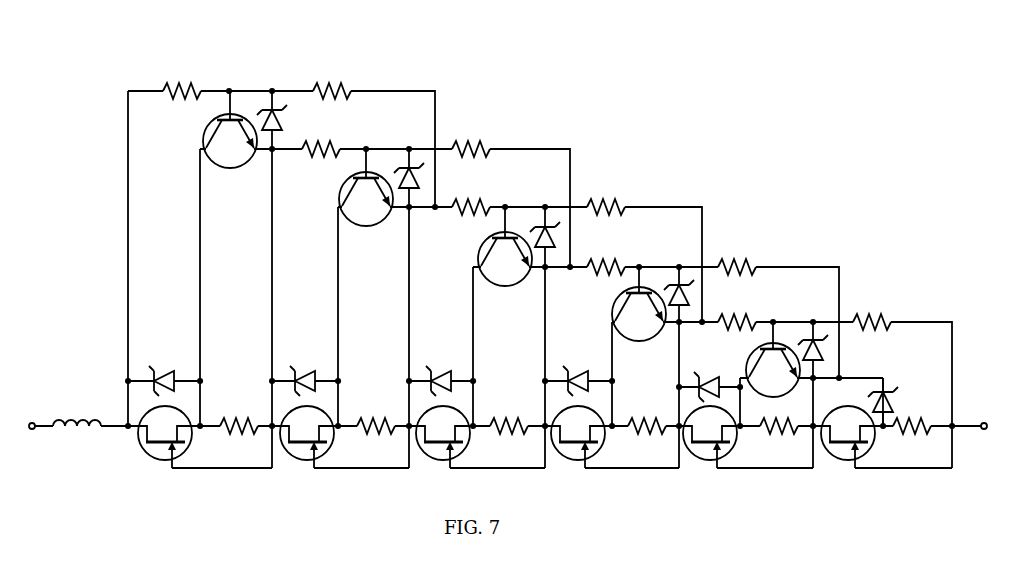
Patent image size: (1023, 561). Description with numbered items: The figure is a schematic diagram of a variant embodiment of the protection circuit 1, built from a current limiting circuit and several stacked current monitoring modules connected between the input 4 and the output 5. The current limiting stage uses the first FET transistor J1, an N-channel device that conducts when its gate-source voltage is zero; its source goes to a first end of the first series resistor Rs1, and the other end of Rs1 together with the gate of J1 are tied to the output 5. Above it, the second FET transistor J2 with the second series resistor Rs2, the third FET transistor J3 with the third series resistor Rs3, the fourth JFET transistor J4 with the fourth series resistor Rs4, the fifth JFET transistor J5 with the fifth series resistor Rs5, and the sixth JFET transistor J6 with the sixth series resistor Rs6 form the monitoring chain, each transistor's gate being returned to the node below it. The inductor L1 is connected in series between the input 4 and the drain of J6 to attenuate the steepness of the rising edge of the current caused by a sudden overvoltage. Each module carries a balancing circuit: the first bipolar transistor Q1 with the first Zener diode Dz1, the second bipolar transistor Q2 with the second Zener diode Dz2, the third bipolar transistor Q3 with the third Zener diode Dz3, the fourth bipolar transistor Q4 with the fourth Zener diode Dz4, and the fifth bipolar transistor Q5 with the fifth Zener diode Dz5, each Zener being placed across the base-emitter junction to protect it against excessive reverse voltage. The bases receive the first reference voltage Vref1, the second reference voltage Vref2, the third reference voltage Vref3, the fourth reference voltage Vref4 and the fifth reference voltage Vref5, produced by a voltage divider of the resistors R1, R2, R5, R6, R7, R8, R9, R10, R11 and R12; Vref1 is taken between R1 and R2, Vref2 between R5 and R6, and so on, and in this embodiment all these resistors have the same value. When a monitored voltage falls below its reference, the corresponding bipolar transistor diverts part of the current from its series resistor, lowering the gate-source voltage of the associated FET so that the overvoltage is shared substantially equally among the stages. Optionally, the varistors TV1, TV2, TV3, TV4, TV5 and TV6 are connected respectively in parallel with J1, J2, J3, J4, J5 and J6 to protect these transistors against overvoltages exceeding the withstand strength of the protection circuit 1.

The protection circuit 1 is at (636, 137).
The input 4 is at (33, 421).
The output 5 is at (984, 421).
The inductor L1 is at (77, 409).
The first resistor R1 is at (872, 313).
The second resistor R2 is at (737, 313).
The resistor R5 is at (737, 257).
The resistor R6 is at (606, 257).
The resistor R7 is at (606, 196).
The resistor R8 is at (471, 196).
The resistor R9 is at (471, 139).
The resistor R10 is at (320, 139).
The resistor R11 is at (334, 81).
The resistor R12 is at (182, 81).
The first series resistor Rs1 is at (912, 415).
The second series resistor Rs2 is at (779, 415).
The third series resistor Rs3 is at (647, 415).
The fourth series resistor Rs4 is at (509, 415).
The fifth series resistor Rs5 is at (376, 415).
The sixth series resistor Rs6 is at (237, 415).
The first bipolar transistor Q1 is at (776, 359).
The second bipolar transistor Q2 is at (645, 304).
The third bipolar transistor Q3 is at (509, 246).
The fourth bipolar transistor Q4 is at (373, 187).
The fifth bipolar transistor Q5 is at (236, 129).
The first Zener diode Dz1 is at (809, 337).
The second Zener diode Dz2 is at (679, 281).
The third Zener diode Dz3 is at (545, 222).
The fourth Zener diode Dz4 is at (409, 164).
The fifth Zener diode Dz5 is at (270, 106).
The varistor TV1 is at (892, 396).
The varistor TV2 is at (709, 378).
The varistor TV3 is at (578, 371).
The varistor TV4 is at (441, 371).
The varistor TV5 is at (305, 371).
The varistor TV6 is at (164, 371).
The first FET transistor J1 is at (848, 437).
The second FET transistor J2 is at (710, 437).
The third FET transistor J3 is at (578, 437).
The fourth JFET transistor J4 is at (443, 437).
The fifth JFET transistor J5 is at (307, 437).
The sixth JFET transistor J6 is at (165, 437).
The first reference voltage Vref1 is at (783, 316).
The second reference voltage Vref2 is at (650, 261).
The third reference voltage Vref3 is at (518, 201).
The fourth reference voltage Vref4 is at (385, 143).
The fifth reference voltage Vref5 is at (240, 85).